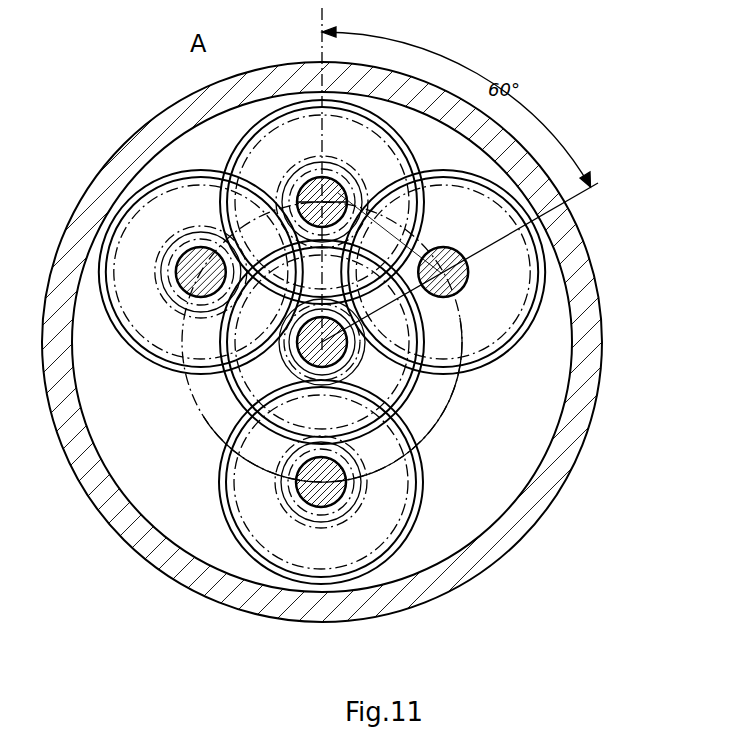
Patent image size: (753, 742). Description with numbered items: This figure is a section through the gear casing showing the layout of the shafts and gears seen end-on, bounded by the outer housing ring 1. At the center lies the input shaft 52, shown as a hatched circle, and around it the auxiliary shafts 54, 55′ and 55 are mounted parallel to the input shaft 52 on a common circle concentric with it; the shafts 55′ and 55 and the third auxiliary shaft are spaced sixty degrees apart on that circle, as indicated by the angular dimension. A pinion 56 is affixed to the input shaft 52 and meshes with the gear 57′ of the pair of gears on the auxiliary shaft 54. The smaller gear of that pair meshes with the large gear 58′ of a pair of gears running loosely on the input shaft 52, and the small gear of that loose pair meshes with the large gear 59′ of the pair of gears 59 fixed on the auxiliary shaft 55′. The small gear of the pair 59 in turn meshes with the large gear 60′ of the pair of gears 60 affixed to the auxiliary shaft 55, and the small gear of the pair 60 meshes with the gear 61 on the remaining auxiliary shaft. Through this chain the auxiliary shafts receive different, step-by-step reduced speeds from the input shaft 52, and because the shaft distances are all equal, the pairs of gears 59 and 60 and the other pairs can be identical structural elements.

The housing 1 is at (578, 405).
The input shaft 52 is at (340, 354).
The auxiliary shaft 54 is at (330, 500).
The auxiliary shaft 55 is at (369, 211).
The auxiliary shaft 55' is at (177, 292).
The pinion 56 is at (292, 362).
The gear 57' is at (291, 482).
The large gear 58' is at (326, 400).
The pair of gears 59 is at (185, 291).
The large gear 59' is at (201, 283).
The pair of gears 60 is at (335, 202).
The large gear 60' is at (306, 202).
The gear 61 is at (500, 355).